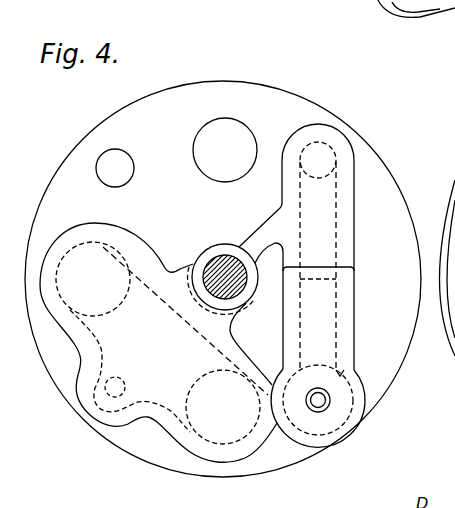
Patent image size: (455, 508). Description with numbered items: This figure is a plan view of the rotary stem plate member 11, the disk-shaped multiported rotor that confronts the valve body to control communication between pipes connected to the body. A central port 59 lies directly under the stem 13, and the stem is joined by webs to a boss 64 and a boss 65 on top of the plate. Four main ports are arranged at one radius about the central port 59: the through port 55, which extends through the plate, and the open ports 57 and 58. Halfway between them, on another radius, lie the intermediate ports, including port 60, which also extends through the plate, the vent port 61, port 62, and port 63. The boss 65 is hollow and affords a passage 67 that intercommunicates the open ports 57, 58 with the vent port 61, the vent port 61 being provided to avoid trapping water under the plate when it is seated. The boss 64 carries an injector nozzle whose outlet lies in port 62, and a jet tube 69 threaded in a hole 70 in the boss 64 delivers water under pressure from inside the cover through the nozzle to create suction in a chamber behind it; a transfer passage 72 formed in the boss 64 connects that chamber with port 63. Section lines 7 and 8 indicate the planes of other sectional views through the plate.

The rotary stem plate member 11 is at (373, 157).
The intermediate port 60 is at (115, 167).
The through port 55 is at (230, 118).
The open port 58 is at (103, 247).
The boss 64 is at (356, 247).
The intermediate port 63 is at (323, 152).
The transfer passage 72 is at (340, 303).
The stem 13 is at (217, 260).
The boss 65 is at (236, 352).
The intermediate port 62 is at (360, 416).
The hole 70 is at (330, 396).
The jet tube 69 is at (323, 392).
The passage 67 is at (88, 332).
The vent port 61 is at (115, 394).
The open port 57 is at (222, 438).
The central port 59 is at (198, 325).
The section line 7- 7 is at (60, 241).
The section line 8- 8 is at (318, 100).